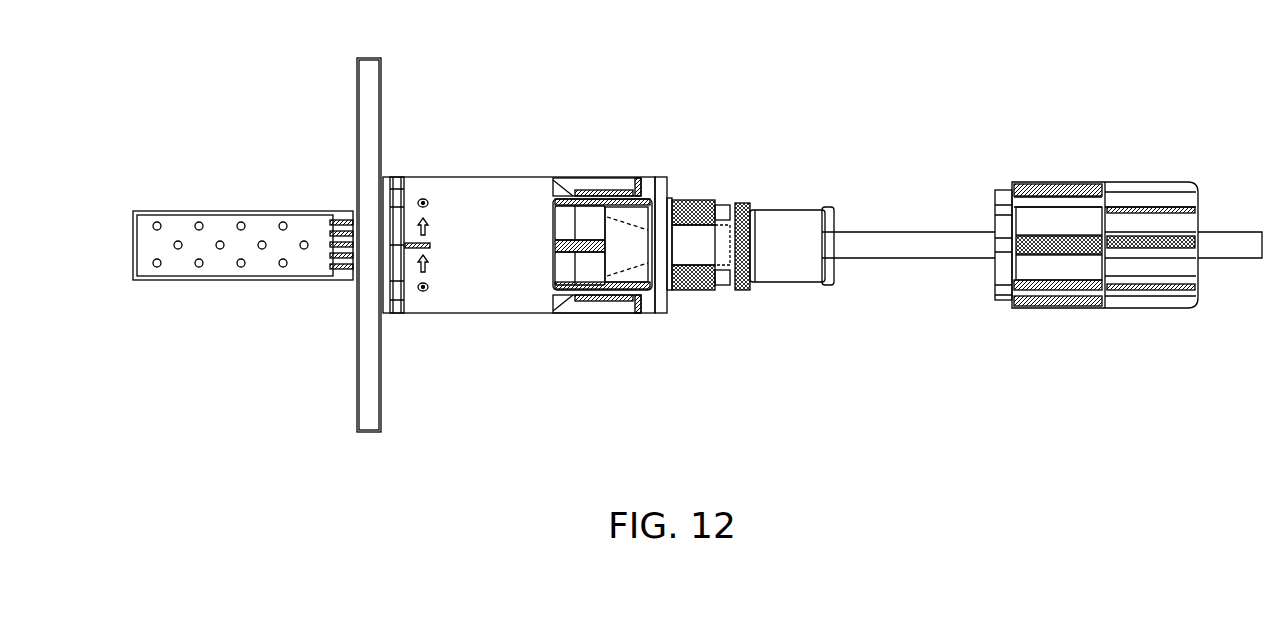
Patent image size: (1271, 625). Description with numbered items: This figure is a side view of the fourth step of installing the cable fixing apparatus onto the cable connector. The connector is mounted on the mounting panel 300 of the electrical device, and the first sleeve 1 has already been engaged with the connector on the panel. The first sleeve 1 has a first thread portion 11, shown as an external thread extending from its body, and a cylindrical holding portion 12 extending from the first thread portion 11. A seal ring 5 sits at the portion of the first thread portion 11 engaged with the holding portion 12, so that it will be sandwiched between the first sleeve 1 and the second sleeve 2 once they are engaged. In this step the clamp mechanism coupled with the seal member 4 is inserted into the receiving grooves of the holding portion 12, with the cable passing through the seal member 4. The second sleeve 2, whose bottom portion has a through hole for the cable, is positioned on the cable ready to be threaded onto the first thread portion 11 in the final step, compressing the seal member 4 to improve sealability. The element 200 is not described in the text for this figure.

The first sleeve 1 is at (485, 242).
The second sleeve 2 is at (1057, 217).
The seal member 4 is at (833, 215).
The seal ring 5 is at (755, 268).
The first thread portion 11 is at (677, 198).
The holding portion 12 is at (795, 243).
The cage 200 is at (255, 232).
The mounting panel 300 is at (372, 210).